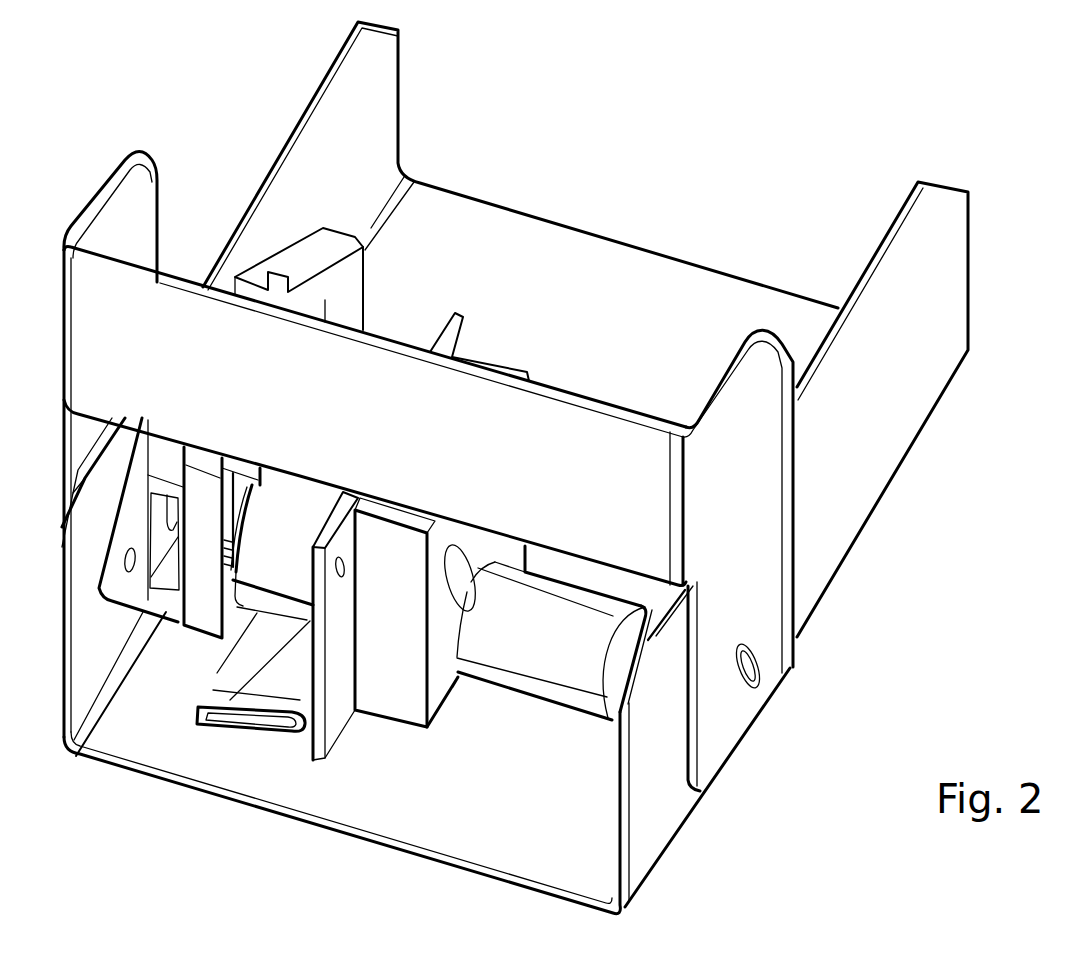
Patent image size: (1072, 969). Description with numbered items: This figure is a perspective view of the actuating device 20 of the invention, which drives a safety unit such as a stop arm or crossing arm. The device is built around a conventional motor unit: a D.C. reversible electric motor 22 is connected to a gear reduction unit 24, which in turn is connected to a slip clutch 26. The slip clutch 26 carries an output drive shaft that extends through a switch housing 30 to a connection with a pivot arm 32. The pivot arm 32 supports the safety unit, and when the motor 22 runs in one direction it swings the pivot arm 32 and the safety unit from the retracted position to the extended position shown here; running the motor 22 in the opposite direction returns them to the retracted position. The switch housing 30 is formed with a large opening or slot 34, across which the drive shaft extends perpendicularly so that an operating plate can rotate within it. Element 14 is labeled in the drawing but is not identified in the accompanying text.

The rear housing wall 14 is at (700, 303).
The mounting bracket 20 is at (583, 360).
The cylindrical roller 22 is at (513, 667).
The support block 24 is at (388, 703).
The slotted bracket 26 is at (290, 587).
The vertical plate 30 is at (203, 617).
The side wall 32 is at (763, 585).
The angled mounting plate 34 is at (178, 607).